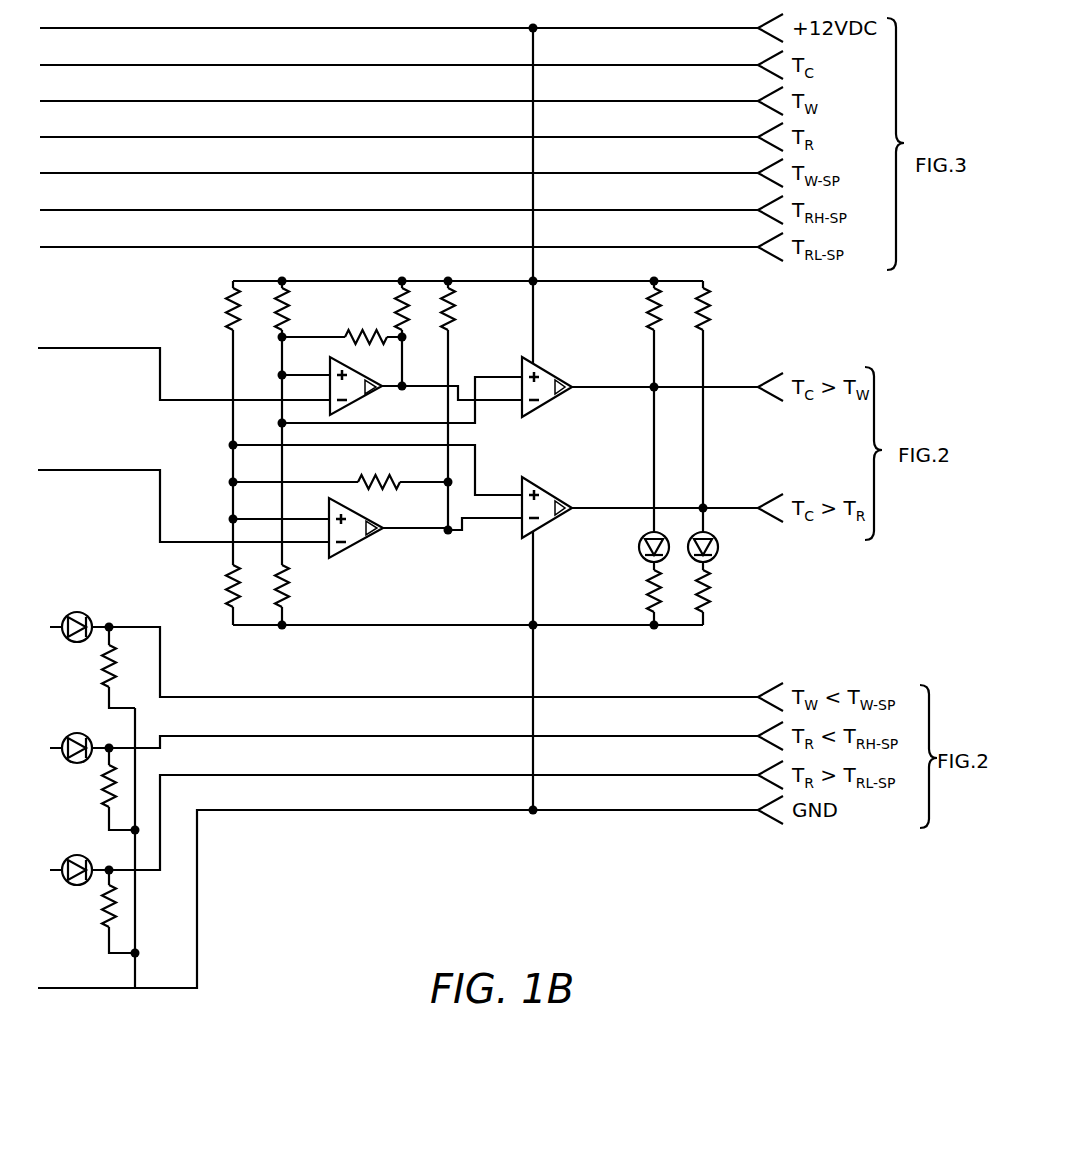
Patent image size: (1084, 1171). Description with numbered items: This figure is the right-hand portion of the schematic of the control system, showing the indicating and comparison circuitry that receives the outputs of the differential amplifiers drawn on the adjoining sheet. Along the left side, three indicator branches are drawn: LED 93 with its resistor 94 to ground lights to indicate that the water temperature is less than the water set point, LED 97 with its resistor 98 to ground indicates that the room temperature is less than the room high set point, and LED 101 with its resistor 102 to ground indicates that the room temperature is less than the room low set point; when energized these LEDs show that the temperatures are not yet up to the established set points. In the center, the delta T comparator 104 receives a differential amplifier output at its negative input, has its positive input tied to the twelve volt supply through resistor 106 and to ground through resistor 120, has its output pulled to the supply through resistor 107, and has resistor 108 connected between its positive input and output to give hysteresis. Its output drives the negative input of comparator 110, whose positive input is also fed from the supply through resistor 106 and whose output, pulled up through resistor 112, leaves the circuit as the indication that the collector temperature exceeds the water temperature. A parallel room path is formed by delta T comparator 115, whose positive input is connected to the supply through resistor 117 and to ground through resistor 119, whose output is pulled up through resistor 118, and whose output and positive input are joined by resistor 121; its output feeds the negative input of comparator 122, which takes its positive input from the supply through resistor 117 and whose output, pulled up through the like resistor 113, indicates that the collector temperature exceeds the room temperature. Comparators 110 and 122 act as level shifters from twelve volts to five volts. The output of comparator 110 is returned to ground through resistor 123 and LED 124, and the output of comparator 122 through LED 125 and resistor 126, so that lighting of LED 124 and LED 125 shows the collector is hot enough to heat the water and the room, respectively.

The LED 93 is at (91, 612).
The resistor 94 is at (114, 646).
The LED 97 is at (83, 732).
The resistor 98 is at (103, 793).
The LED 101 is at (78, 883).
The resistor 102 is at (106, 934).
The delta T comparator 104 is at (370, 392).
The resistor 106 is at (306, 421).
The resistor 107 is at (396, 318).
The resistor 108 is at (344, 342).
The comparator 110 is at (556, 367).
The resistor 112 is at (647, 319).
The resistor 113 is at (721, 406).
The delta T comparator 115 is at (327, 517).
The resistor 117 is at (226, 302).
The resistor 118 is at (471, 406).
The resistor 119 is at (227, 589).
The resistor 120 is at (290, 580).
The resistor 121 is at (362, 476).
The comparator 122 is at (556, 492).
The resistor 123 is at (646, 599).
The LED 124 is at (639, 536).
The LED 125 is at (719, 552).
The resistor 126 is at (712, 600).